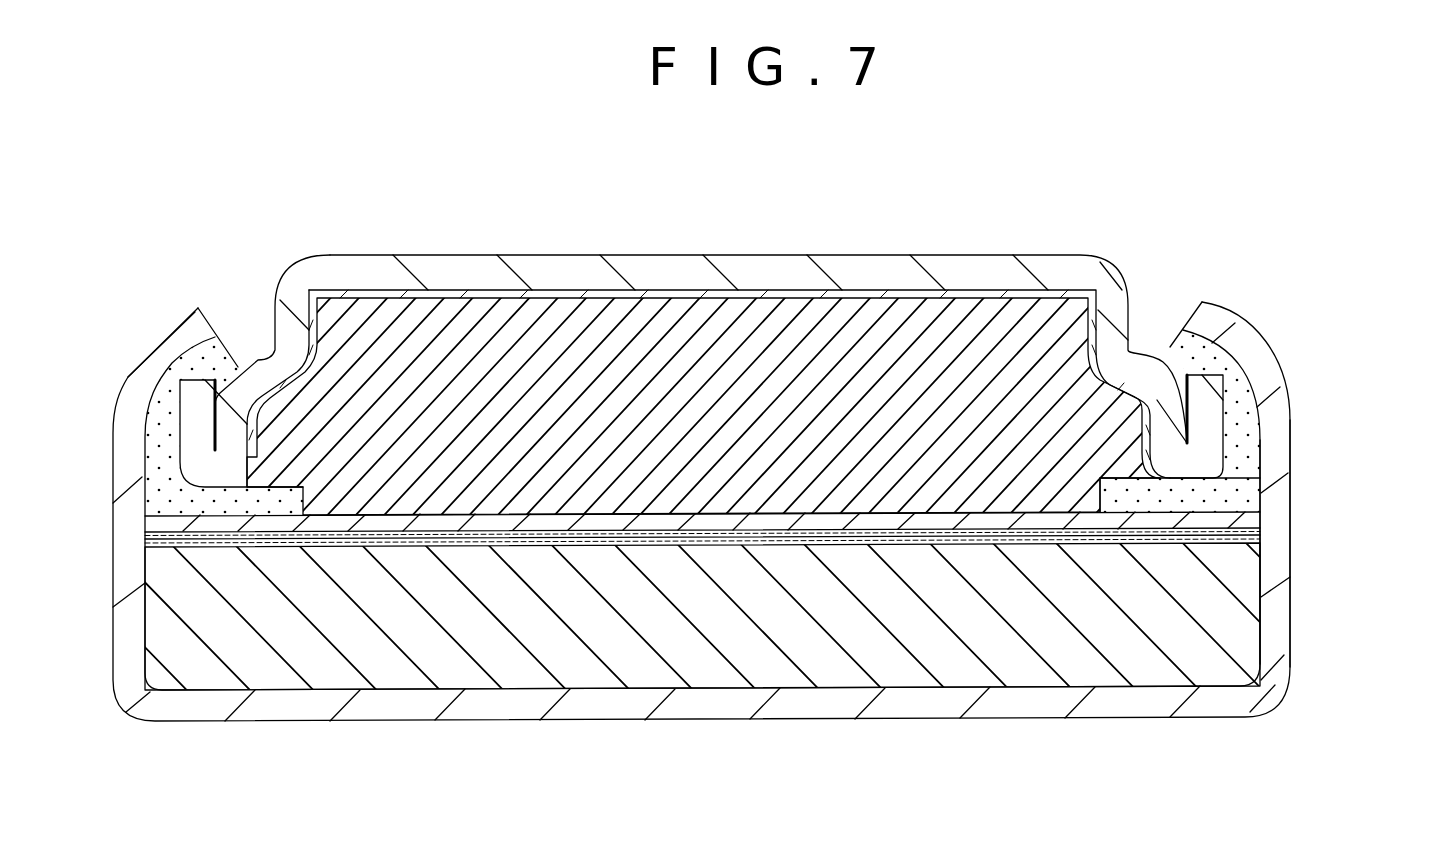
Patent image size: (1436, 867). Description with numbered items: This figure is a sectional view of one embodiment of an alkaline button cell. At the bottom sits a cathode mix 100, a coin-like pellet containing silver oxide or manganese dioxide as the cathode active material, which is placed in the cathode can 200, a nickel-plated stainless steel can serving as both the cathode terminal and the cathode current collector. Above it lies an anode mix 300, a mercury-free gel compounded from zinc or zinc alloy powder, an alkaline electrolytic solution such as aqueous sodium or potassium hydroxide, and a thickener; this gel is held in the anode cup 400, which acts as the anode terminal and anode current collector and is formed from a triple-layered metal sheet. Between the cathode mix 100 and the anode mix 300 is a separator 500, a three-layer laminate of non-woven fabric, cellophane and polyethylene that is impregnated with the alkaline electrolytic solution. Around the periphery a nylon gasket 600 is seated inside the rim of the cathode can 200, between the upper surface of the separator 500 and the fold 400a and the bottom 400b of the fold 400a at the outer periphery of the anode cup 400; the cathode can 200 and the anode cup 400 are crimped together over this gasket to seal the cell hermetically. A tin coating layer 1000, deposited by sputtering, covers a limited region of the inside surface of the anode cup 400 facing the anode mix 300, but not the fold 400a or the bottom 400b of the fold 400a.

The cathode mix 100 is at (459, 692).
The cathode can 200 is at (255, 702).
The anode mix 300 is at (858, 320).
The anode cup 400 is at (390, 277).
The fold 400a is at (1225, 433).
The bottom of the fold 400b is at (1233, 457).
The separator 500 is at (800, 520).
The nylon gasket 600 is at (1170, 348).
The tin coating layer 1000 is at (612, 298).